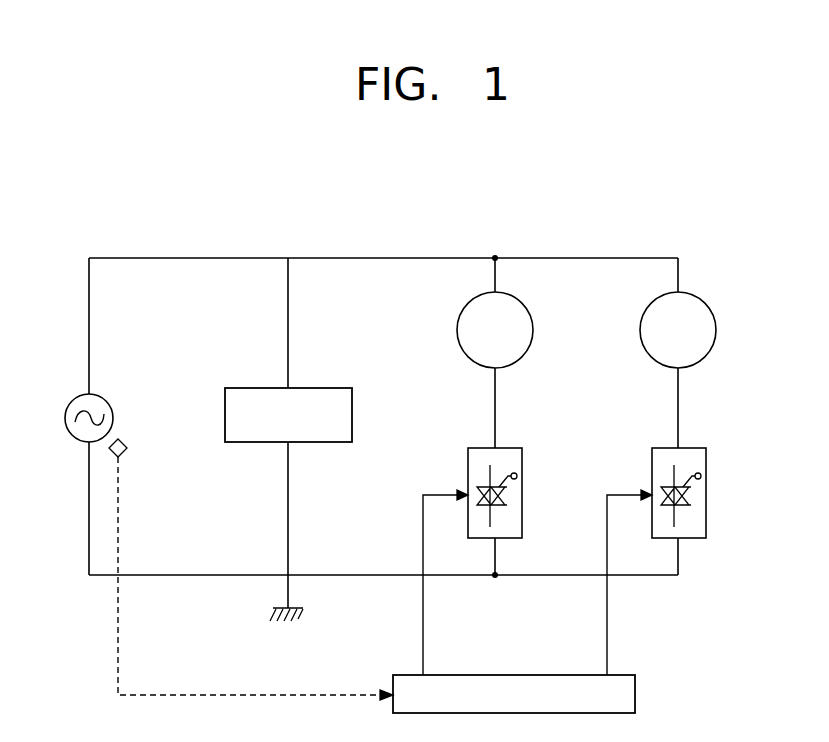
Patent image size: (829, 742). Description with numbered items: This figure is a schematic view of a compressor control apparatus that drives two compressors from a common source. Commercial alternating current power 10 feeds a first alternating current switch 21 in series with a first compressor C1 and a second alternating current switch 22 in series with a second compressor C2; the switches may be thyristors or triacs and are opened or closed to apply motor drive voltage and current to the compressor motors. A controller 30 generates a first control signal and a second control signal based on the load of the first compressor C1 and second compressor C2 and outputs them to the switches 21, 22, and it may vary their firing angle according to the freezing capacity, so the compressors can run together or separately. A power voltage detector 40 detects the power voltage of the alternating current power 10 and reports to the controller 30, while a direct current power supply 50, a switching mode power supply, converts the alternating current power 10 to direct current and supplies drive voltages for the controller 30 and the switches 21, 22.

The commercial alternating current power 10 is at (72, 400).
The power voltage detector 40 is at (127, 448).
The direct current power supply 50 is at (257, 388).
The first compressor C1 is at (533, 330).
The second compressor C2 is at (716, 330).
The first alternating current switch 21 is at (522, 493).
The second alternating current switch 22 is at (706, 493).
The controller 30 is at (513, 675).